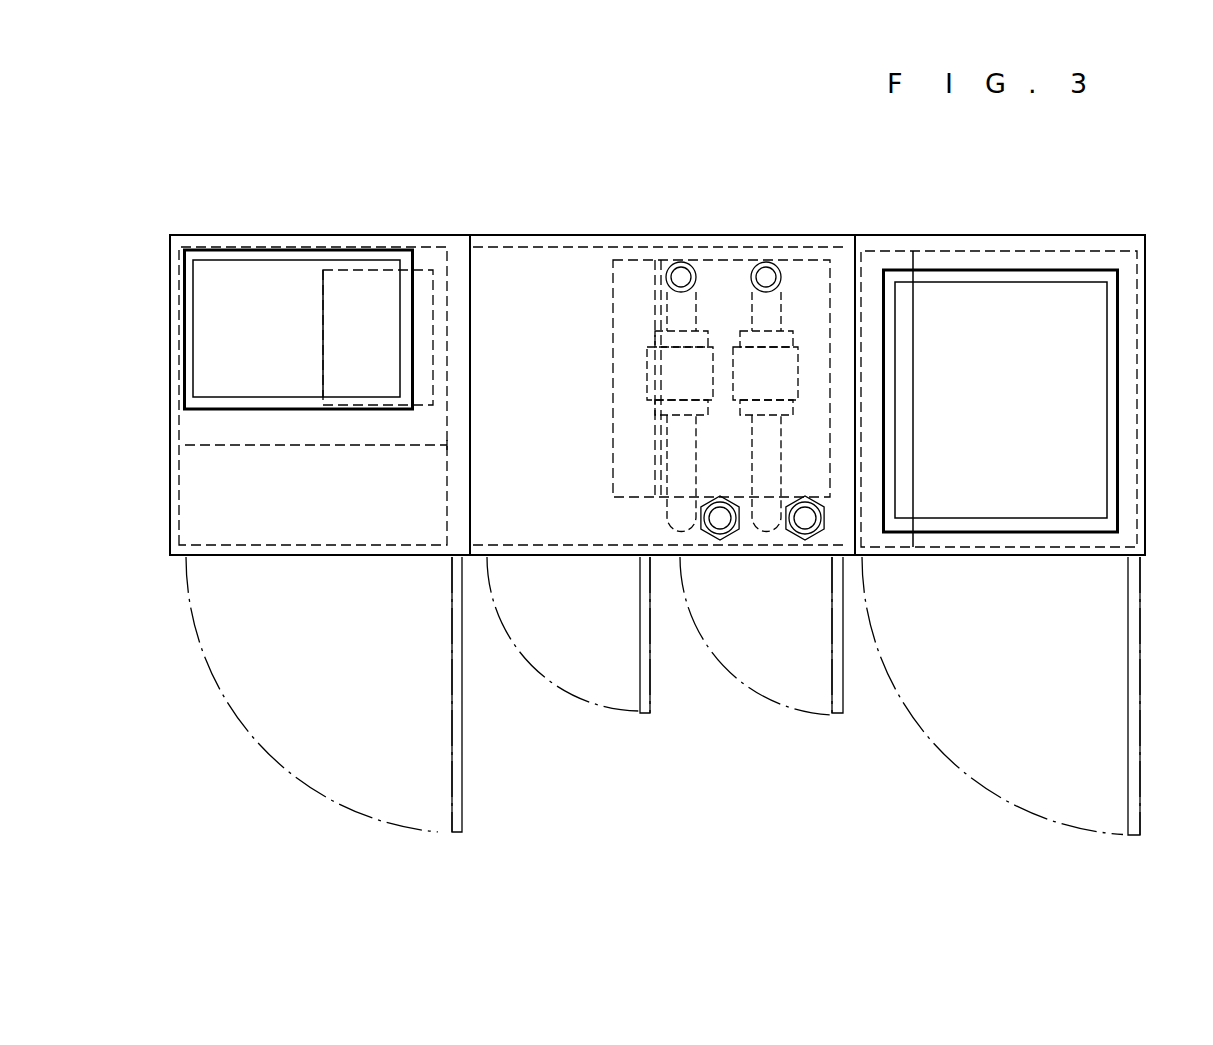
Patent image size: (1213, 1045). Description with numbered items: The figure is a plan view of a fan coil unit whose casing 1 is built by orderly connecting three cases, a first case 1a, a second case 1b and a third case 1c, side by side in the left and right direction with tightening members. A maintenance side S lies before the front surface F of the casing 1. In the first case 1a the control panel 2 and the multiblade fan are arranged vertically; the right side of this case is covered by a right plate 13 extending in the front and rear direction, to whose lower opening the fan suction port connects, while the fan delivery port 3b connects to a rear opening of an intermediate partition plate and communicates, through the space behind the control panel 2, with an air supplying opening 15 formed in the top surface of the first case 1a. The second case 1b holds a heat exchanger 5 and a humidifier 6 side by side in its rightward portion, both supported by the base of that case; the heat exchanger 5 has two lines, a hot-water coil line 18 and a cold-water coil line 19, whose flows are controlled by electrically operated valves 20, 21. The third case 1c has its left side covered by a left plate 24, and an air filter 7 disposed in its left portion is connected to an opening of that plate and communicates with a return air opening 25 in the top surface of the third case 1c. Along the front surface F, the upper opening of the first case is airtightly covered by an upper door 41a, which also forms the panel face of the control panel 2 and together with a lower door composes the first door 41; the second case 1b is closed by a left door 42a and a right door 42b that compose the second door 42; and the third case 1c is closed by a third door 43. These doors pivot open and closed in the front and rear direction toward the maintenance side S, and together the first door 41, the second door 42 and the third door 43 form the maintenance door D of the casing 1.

The casing 1 is at (535, 141).
The first case 1a is at (428, 234).
The second case 1b is at (636, 234).
The third case 1c is at (881, 234).
The control panel 2 is at (185, 487).
The delivery port 3b is at (323, 327).
The heat exchanger 5 is at (830, 403).
The humidifier 6 is at (613, 455).
The air filter 7 is at (907, 445).
The right plate 13 is at (443, 418).
The air supplying opening 15 is at (196, 331).
The hot-water coil line 18 is at (722, 547).
The cold-water coil line 19 is at (798, 547).
The electrically operated valve 20 is at (647, 352).
The electrically operated valve 21 is at (733, 365).
The left plate 24 is at (863, 333).
The return air opening 25 is at (1105, 385).
The upper door 41a is at (376, 694).
The first door 41 is at (462, 742).
The left door 42a is at (642, 715).
The right door 42b is at (833, 715).
The second door 42 is at (818, 770).
The third door 43 is at (1027, 696).
The maintenance door D is at (1137, 683).
The front surface F is at (1028, 557).
The maintenance side S is at (925, 825).